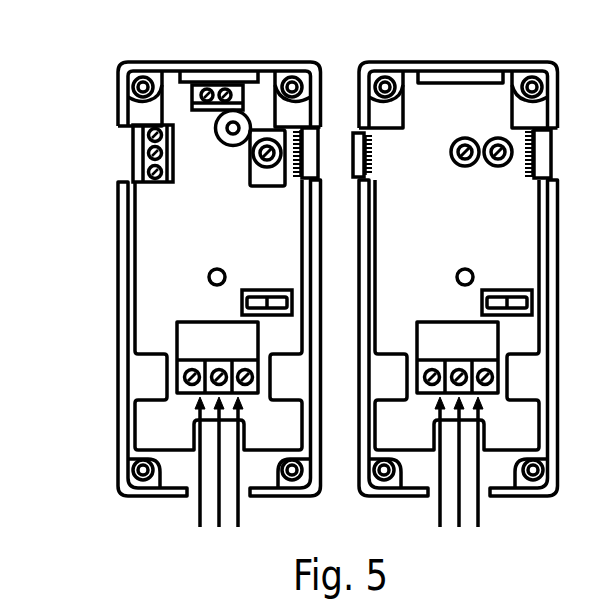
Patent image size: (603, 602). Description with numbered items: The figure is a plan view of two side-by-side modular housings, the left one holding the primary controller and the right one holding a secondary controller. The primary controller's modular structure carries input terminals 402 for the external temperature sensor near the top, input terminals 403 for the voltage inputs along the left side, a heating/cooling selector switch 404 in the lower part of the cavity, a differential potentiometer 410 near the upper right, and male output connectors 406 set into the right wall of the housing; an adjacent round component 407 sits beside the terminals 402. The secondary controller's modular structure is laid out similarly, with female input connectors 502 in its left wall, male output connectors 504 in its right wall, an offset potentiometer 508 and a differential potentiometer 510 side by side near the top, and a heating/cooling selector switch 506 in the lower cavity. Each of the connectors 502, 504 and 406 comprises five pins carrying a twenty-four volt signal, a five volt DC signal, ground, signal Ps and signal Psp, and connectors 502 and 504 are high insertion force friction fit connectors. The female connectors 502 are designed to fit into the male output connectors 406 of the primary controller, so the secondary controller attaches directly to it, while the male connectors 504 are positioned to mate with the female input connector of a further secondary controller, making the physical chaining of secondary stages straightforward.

The input terminals 402 is at (203, 85).
The input terminals 403 is at (130, 157).
The heating/cooling selector switch 404 is at (267, 290).
The male output connectors 406 is at (322, 130).
The adjustment potentiometer 407 is at (233, 125).
The differential potentiometer 410 is at (267, 175).
The female input connectors 502 is at (370, 157).
The male output connectors 504 is at (558, 137).
The heating/cooling selector switch 506 is at (503, 290).
The offset potentiometer 508 is at (460, 140).
The differential potentiometer 510 is at (493, 138).